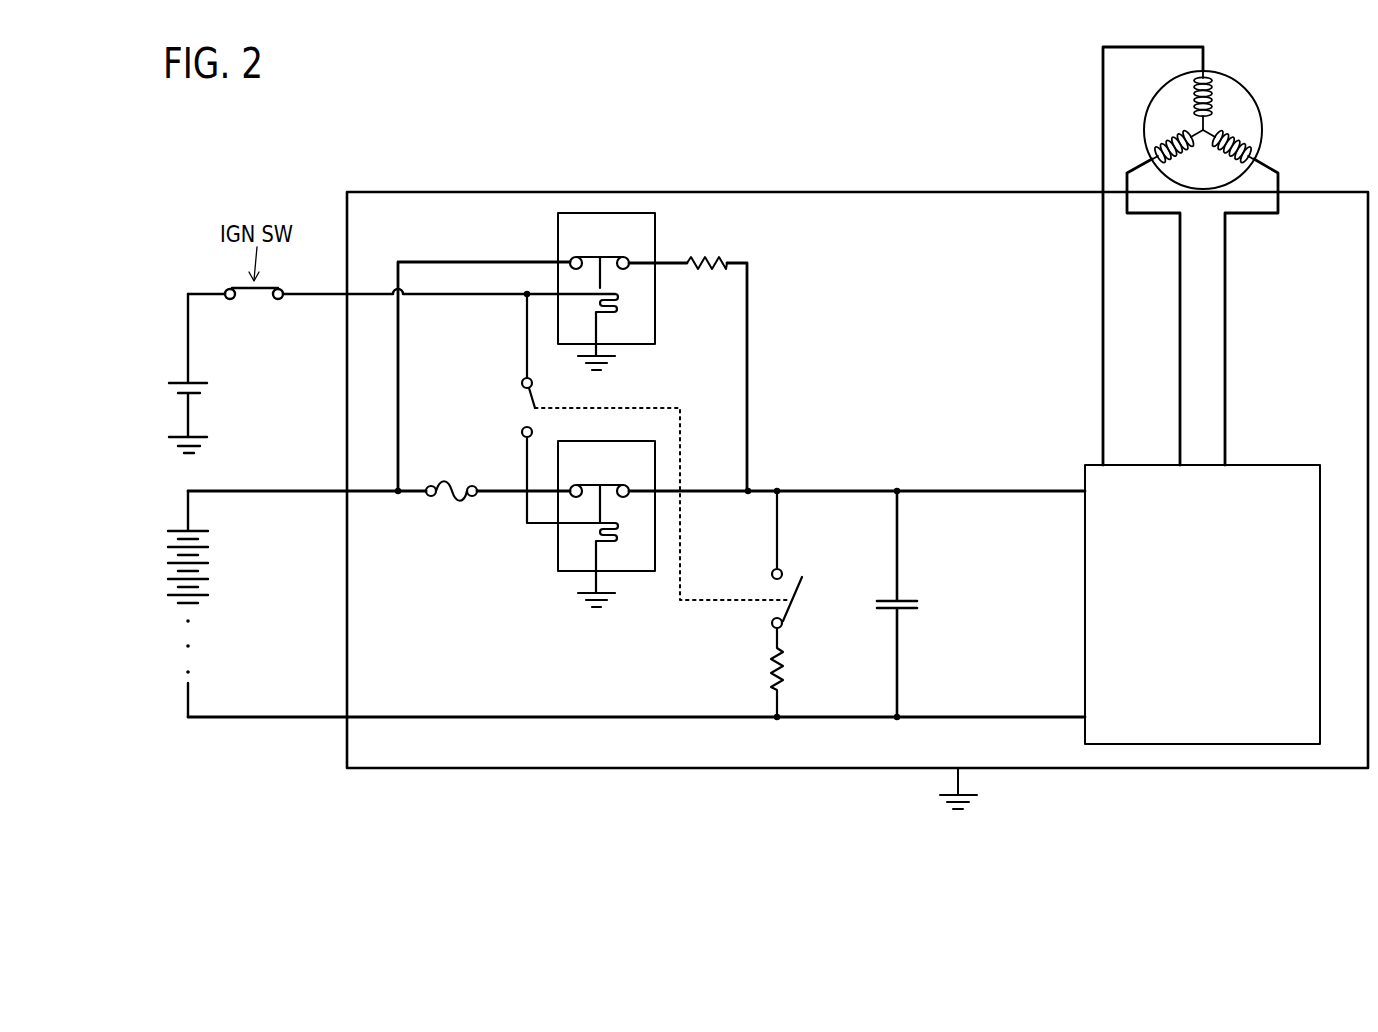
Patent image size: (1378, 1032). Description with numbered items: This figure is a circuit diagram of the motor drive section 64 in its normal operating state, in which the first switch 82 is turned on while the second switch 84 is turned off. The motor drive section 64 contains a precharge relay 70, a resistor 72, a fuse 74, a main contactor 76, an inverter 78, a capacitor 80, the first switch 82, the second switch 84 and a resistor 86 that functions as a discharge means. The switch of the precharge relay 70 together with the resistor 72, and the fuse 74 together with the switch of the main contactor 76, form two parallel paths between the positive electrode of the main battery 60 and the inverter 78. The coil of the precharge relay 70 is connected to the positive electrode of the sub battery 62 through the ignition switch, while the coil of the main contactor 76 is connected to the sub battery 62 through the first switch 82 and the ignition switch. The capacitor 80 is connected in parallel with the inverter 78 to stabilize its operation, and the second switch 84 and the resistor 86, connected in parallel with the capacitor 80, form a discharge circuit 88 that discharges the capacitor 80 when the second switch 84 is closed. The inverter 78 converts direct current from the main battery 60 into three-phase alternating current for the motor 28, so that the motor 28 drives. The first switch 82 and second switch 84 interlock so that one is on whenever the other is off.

The motor 28 is at (1253, 97).
The main battery 60 is at (220, 567).
The sub battery 62 is at (217, 390).
The motor drive section 64 is at (855, 192).
The precharge relay 70 is at (558, 233).
The resistor 72 is at (712, 270).
The fuse 74 is at (445, 505).
The main contactor 76 is at (558, 550).
The inverter 78 is at (1085, 537).
The capacitor 80 is at (910, 597).
The first switch 82 is at (508, 406).
The second switch 84 is at (755, 583).
The resistor 86 is at (771, 670).
The discharge circuit 88 is at (805, 637).